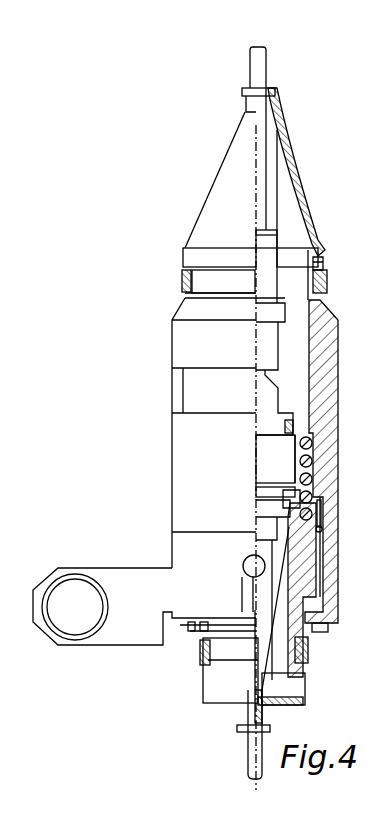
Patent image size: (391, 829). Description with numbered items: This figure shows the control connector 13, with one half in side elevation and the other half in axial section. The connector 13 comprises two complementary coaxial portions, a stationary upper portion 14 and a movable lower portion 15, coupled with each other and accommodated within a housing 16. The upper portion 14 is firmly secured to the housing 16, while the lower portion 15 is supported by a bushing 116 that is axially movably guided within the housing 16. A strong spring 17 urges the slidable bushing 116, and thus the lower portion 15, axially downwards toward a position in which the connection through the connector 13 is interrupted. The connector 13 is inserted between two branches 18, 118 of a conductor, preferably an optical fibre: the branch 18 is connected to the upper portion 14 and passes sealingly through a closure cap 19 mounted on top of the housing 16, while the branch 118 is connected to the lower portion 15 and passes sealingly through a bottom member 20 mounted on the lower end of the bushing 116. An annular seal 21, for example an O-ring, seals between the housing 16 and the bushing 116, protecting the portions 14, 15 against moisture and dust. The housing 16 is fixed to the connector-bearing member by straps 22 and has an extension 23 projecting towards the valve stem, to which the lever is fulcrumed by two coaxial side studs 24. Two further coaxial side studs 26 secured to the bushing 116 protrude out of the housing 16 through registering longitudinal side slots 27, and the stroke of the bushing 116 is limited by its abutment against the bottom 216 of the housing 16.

The connector 13 is at (170, 331).
The upper portion 14 is at (302, 435).
The lower portion 15 is at (275, 537).
The housing 16 is at (330, 438).
The spring 17 is at (312, 460).
The branch of the conductor 18 is at (260, 57).
The closure cap 19 is at (296, 170).
The bottom member 20 is at (304, 682).
The annular seal 21 is at (320, 528).
The straps 22 is at (328, 284).
The extension 23 is at (138, 637).
The side studs 24 is at (63, 620).
The side studs 26 is at (244, 561).
The longitudinal side slots 27 is at (238, 588).
The bushing 116 is at (312, 561).
The branch of the conductor 118 is at (248, 762).
The bottom of the housing 216 is at (338, 620).